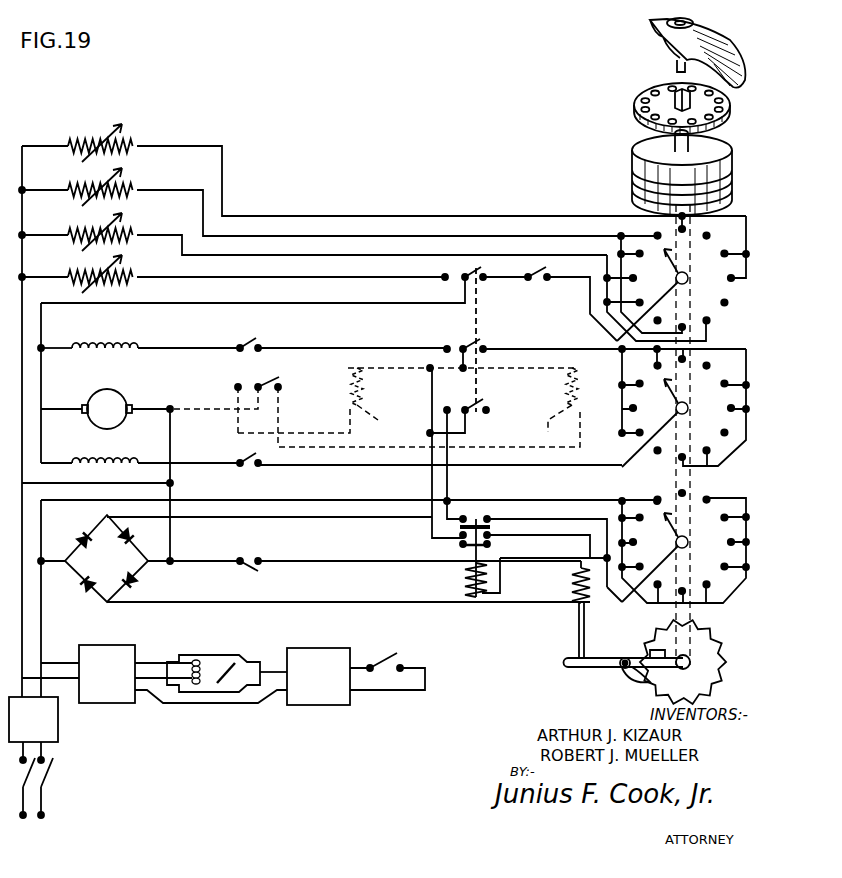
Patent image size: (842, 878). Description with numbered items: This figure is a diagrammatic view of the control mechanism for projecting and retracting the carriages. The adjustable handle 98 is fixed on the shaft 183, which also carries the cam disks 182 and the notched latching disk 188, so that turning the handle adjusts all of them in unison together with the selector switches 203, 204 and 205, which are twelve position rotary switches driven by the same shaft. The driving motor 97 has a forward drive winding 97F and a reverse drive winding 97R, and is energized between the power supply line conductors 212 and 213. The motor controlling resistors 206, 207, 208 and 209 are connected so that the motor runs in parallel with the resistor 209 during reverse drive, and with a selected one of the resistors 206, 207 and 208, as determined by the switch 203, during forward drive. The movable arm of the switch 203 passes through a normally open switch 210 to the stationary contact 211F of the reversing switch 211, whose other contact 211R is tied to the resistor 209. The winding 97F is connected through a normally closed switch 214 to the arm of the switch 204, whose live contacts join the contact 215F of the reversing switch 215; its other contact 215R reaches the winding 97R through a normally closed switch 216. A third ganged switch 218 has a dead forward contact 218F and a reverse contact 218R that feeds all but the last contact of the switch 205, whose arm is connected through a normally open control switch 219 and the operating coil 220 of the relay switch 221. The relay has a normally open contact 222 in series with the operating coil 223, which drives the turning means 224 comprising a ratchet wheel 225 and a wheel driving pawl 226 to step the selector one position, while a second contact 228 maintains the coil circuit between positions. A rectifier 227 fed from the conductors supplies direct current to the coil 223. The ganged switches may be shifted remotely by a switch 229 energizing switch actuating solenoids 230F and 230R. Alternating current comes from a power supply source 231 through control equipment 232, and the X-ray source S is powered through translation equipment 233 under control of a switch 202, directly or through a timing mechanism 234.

The adjustable handle 98 is at (707, 33).
The latching disk 188 is at (632, 107).
The cam disks 182 is at (619, 170).
The shaft 183 is at (698, 147).
The motor controlling resistor 206 is at (84, 139).
The motor controlling resistor 207 is at (84, 183).
The motor controlling resistor 208 is at (82, 228).
The motor controlling resistor 209 is at (82, 270).
The double throw single pole reversing switch 211 is at (466, 269).
The stationary contact 211R is at (440, 282).
The stationary contact 211F is at (484, 279).
The normally open switch 210 is at (544, 280).
The selector switch 203 is at (746, 302).
The normally closed switch 216 is at (245, 341).
The double throw single pole reversing switch 215 is at (469, 334).
The stationary contact 215R is at (446, 348).
The stationary contact 215F is at (491, 349).
The single pole double throw switch 229 is at (242, 378).
The reverse drive winding 97R is at (128, 354).
The motor 97 is at (105, 409).
The forward drive winding 97F is at (126, 459).
The stationary contact 218R is at (444, 407).
The single pole double throw switch 218 is at (471, 406).
The stationary contact 218F is at (503, 393).
The switch actuating solenoid 230R is at (409, 407).
The switch actuating solenoid 230F is at (548, 407).
The selector switch 204 is at (747, 457).
The normally closed switch 214 is at (250, 470).
The power supply line conductor 212 is at (25, 543).
The rectifier 227 is at (104, 558).
The power supply line conductor 213 is at (42, 578).
The normally open control switch 219 is at (246, 566).
The normally open contact 228 is at (476, 520).
The relay switch 221 is at (440, 548).
The normally open contact 222 is at (489, 546).
The operating coil 220 is at (482, 598).
The operating coil 223 is at (571, 592).
The selector switch 205 is at (747, 598).
The ratchet wheel 225 is at (665, 643).
The wheel driving pawl 226 is at (625, 670).
The selector switch turning means 224 is at (729, 692).
The translation equipment 233 is at (183, 674).
The X-ray source S is at (214, 664).
The timing mechanism 234 is at (356, 676).
The control equipment 232 is at (33, 719).
The power supply source 231 is at (32, 820).
The switch 202 is at (380, 653).